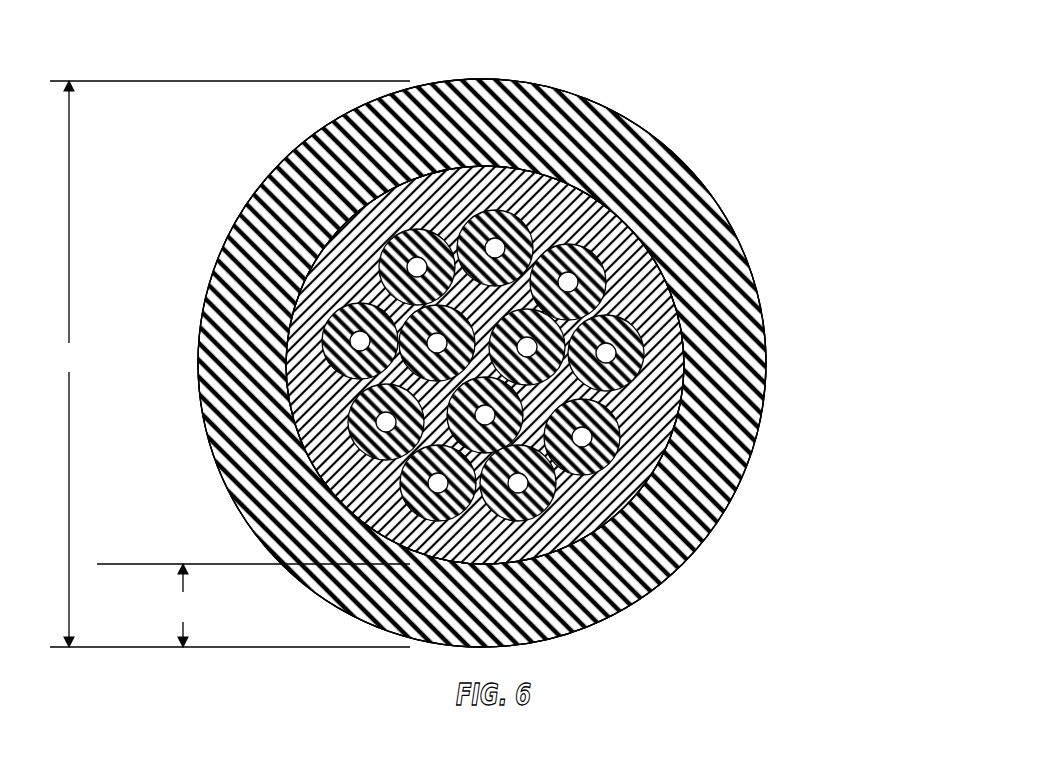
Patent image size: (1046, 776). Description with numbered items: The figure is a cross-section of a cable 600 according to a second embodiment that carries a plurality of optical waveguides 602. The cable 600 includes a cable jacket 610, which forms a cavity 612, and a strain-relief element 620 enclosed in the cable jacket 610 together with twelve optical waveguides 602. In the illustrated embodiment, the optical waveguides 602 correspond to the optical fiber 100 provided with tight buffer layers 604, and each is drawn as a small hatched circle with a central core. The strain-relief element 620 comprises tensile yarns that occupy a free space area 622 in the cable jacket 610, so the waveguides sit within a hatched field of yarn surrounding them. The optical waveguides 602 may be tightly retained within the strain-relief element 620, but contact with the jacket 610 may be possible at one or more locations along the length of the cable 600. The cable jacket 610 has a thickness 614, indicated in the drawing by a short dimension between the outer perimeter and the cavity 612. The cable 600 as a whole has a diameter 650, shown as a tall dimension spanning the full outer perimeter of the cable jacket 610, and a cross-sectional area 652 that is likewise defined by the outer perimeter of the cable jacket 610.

The cable 600 is at (300, 55).
The cable jacket 610 is at (615, 140).
The cavity 612 is at (600, 503).
The strain-relief element 620 is at (597, 240).
The free space area 622 is at (657, 382).
The optical fiber 100 is at (575, 292).
The optical waveguides 602 is at (393, 490).
The tight buffer layers 604 is at (393, 253).
The diameter 650 is at (230, 364).
The cross-sectional area 652 is at (737, 490).
The thickness 614 is at (253, 605).